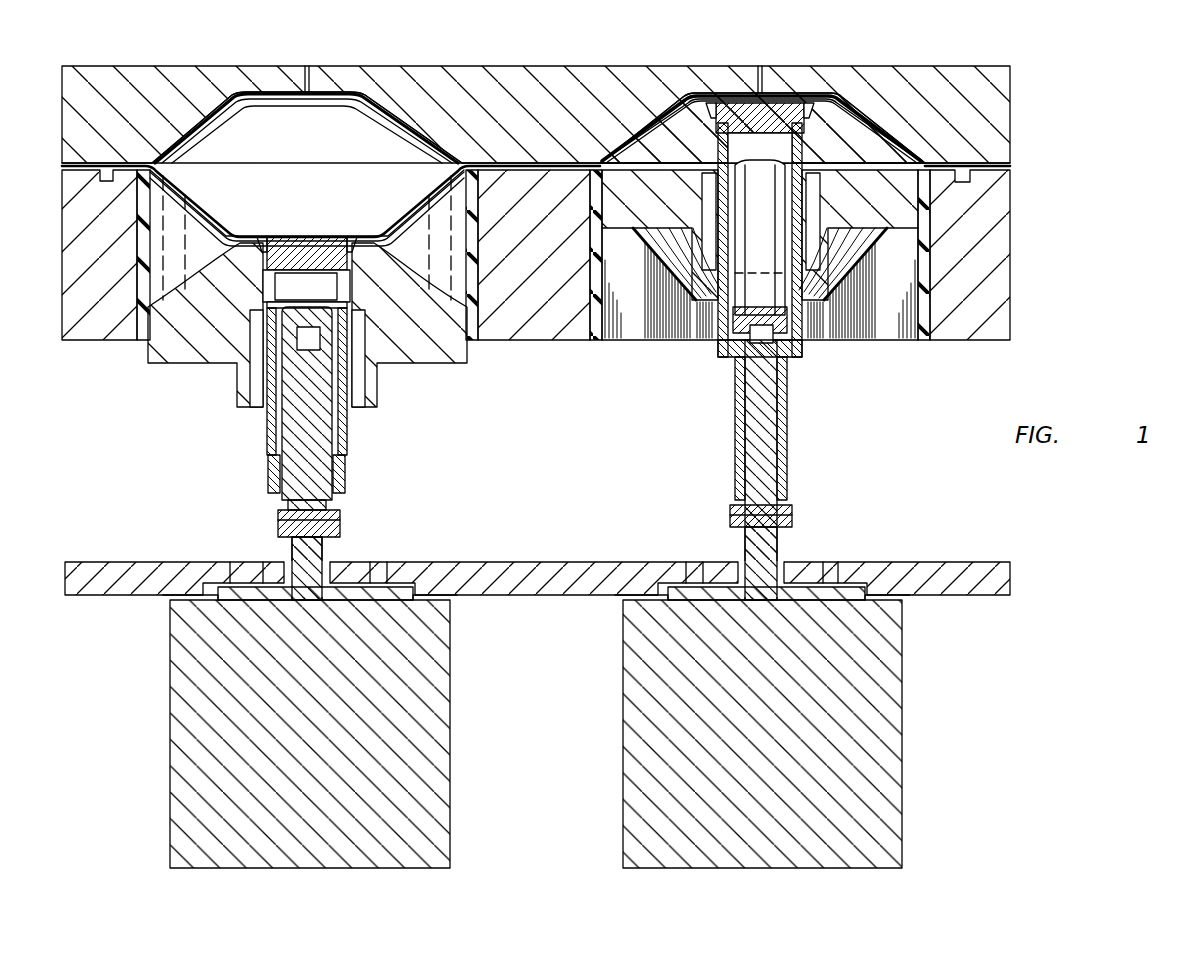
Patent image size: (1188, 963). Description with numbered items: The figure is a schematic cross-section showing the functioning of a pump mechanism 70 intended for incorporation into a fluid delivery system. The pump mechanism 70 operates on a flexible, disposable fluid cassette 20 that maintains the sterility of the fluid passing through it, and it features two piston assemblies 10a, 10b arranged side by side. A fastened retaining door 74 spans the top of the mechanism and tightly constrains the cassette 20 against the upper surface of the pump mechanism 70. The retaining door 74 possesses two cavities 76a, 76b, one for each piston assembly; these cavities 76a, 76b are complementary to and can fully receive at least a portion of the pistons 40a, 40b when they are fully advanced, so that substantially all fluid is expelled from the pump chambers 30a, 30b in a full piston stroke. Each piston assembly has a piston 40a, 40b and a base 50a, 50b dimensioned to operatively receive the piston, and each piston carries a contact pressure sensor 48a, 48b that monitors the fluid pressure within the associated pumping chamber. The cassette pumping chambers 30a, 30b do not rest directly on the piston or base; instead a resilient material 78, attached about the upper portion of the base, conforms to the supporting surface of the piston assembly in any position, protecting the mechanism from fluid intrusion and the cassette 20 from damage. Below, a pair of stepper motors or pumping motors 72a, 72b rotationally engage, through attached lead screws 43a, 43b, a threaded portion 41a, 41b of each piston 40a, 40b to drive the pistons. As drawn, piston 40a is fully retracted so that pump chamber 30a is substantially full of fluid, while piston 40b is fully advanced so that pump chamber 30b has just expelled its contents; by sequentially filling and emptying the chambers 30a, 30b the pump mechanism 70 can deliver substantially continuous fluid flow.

The pump mechanism 70 is at (615, 443).
The retaining door 74 is at (630, 66).
The cavity 76a is at (220, 110).
The cavity 76b is at (701, 95).
The fluid cassette 20 is at (352, 103).
The resilient material 78 is at (422, 216).
The pump chamber 30a is at (332, 211).
The pump chamber 30b is at (828, 97).
The base 50a is at (204, 246).
The base 50b is at (897, 307).
The pressure sensor 48a is at (329, 269).
The pressure sensor 48b is at (782, 132).
The piston 40a is at (222, 337).
The piston 40b is at (888, 191).
The threaded portion 41a is at (348, 490).
The threaded portion 41b is at (717, 352).
The lead screw 43a is at (280, 499).
The lead screw 43b is at (790, 455).
The piston assembly 10a is at (320, 385).
The piston assembly 10b is at (752, 351).
The pumping motor 72a is at (333, 738).
The pumping motor 72b is at (787, 738).